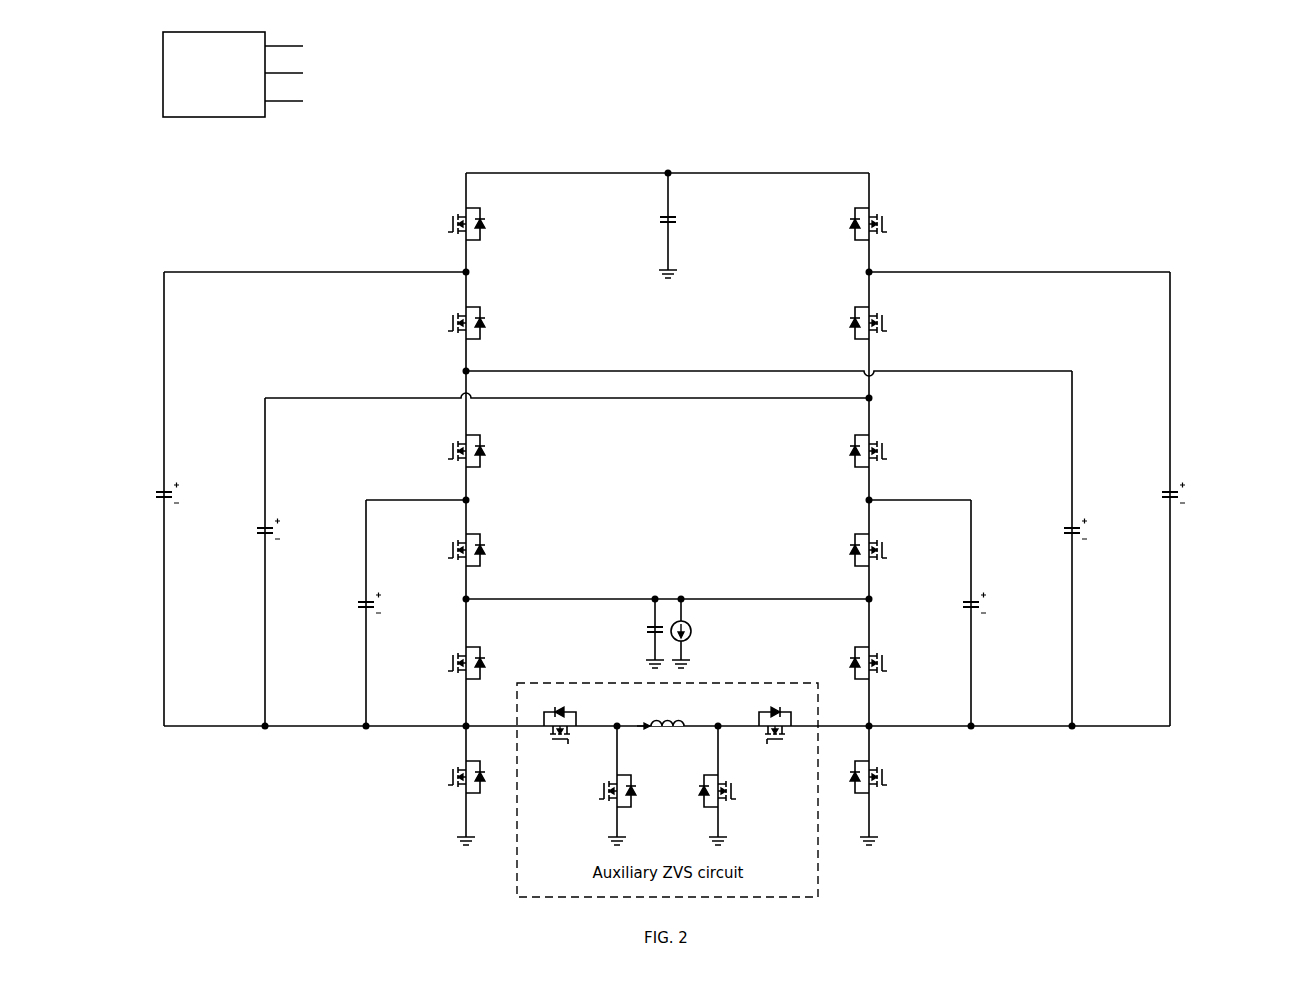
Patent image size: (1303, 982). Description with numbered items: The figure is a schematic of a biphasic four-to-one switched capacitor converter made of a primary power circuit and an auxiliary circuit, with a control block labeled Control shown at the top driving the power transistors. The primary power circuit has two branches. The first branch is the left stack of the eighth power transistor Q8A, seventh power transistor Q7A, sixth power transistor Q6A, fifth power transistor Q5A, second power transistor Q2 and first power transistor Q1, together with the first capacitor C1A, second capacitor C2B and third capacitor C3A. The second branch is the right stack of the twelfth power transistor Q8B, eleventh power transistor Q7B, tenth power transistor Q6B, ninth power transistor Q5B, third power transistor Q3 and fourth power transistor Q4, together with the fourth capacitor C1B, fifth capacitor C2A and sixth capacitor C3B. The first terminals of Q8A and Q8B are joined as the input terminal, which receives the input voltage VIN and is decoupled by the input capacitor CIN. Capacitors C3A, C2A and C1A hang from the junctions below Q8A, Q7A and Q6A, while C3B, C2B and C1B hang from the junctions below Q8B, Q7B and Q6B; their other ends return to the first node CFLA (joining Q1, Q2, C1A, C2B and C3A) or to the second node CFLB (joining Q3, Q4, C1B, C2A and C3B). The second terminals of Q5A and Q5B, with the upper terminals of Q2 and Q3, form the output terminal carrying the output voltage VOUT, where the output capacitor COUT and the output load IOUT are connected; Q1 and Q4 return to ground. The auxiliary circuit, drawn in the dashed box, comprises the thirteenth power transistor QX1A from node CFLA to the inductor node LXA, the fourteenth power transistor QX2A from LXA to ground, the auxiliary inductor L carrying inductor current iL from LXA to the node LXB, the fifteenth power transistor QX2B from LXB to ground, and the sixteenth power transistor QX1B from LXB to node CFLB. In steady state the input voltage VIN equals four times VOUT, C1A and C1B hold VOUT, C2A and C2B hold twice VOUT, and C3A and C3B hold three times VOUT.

The controller Control is at (336, 74).
The first power transistor Q1 is at (455, 777).
The second power transistor Q2 is at (455, 663).
The third power transistor Q3 is at (880, 663).
The fourth power transistor Q4 is at (880, 777).
The fifth power transistor Q5A is at (450, 550).
The sixth power transistor Q6A is at (450, 451).
The seventh power transistor Q7A is at (450, 323).
The eighth power transistor Q8A is at (450, 224).
The ninth power transistor Q5B is at (885, 550).
The tenth power transistor Q6B is at (885, 451).
The eleventh power transistor Q7B is at (885, 323).
The twelfth power transistor Q8B is at (885, 224).
The input capacitor CIN is at (684, 225).
The input voltage VIN is at (668, 158).
The output voltage VOUT is at (668, 584).
The output capacitor COUT is at (631, 633).
The output load IOUT is at (703, 633).
The first capacitor C1A is at (334, 600).
The second capacitor C2B is at (229, 526).
The third capacitor C3A is at (128, 483).
The fourth capacitor C1B is at (1006, 600).
The fifth capacitor C2A is at (1111, 526).
The sixth capacitor C3B is at (1210, 483).
The first node CFLA is at (486, 717).
The second node CFLB is at (849, 717).
The thirteenth power transistor QX1A is at (548, 735).
The sixteenth power transistor QX1B is at (787, 735).
The fourteenth power transistor QX2A is at (595, 785).
The fifteenth power transistor QX2B is at (740, 785).
The inductor node LXA is at (618, 717).
The inductor node LXB is at (718, 717).
The auxiliary inductor L is at (667, 715).
The inductor current iL is at (645, 734).